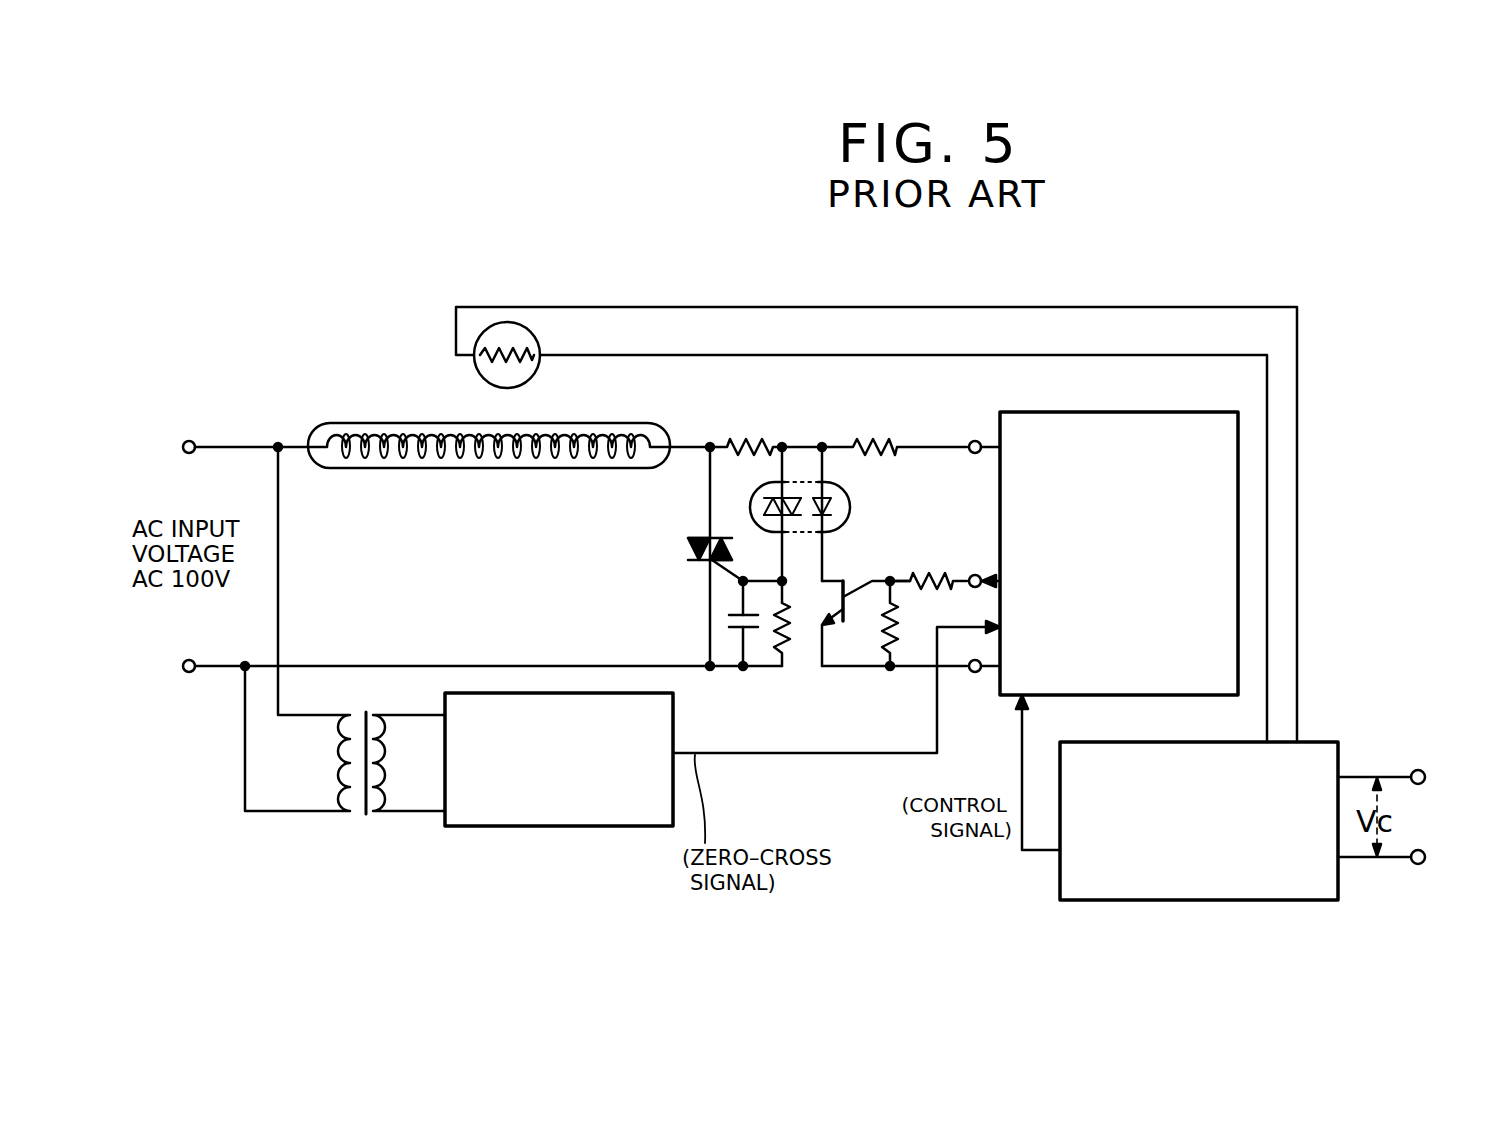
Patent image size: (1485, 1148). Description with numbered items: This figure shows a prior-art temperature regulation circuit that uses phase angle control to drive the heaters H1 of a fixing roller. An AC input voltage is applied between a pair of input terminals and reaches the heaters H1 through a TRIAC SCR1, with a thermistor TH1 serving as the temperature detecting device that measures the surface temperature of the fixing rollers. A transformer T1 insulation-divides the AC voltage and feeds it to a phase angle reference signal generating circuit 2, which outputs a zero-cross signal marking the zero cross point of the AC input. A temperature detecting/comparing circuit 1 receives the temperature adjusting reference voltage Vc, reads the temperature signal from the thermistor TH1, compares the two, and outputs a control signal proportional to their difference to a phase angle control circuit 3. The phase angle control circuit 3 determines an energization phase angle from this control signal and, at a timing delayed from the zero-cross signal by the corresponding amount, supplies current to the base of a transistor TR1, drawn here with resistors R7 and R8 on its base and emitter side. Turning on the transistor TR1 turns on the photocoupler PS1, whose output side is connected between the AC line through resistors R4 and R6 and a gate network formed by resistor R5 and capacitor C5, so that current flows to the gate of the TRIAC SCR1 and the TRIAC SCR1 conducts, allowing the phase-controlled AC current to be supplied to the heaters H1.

The temperature detecting/comparing circuit 1 is at (1085, 742).
The phase angle reference signal generating circuit 2 is at (508, 828).
The phase angle control circuit 3 is at (1127, 412).
The heaters H1 is at (388, 470).
The temperature detecting device TH1 is at (520, 325).
The transformer T1 is at (370, 705).
The resistor R4 is at (745, 440).
The resistor R5 is at (786, 620).
The resistor R6 is at (872, 436).
The resistor R7 is at (932, 580).
The resistor R8 is at (898, 632).
The capacitor C5 is at (737, 630).
The photocoupler PS1 is at (800, 478).
The TRIAC SCR1 is at (688, 548).
The transistor TR1 is at (840, 578).